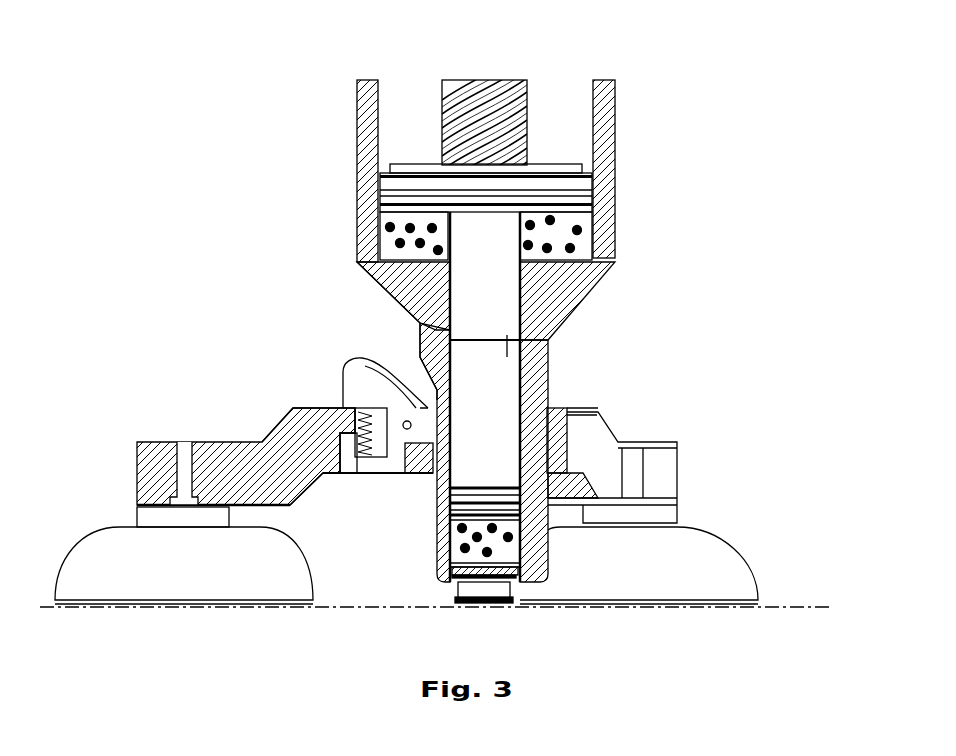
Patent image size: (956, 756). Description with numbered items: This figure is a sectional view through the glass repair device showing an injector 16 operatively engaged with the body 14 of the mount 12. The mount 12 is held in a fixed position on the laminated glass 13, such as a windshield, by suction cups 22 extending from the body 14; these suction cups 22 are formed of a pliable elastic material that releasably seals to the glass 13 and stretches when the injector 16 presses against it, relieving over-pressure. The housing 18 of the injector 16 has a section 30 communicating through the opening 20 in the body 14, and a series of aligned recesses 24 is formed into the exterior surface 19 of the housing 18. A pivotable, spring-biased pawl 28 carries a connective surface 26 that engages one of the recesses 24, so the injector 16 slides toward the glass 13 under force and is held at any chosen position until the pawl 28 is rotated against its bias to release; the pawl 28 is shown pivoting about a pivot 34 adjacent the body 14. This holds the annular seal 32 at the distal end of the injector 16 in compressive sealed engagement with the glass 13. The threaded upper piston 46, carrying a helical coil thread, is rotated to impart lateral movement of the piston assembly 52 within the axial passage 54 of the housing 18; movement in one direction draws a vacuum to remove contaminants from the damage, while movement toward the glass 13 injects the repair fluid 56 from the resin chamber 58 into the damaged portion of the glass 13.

The mount 12 is at (137, 445).
The glass 13 is at (345, 606).
The body 14 is at (280, 440).
The injector 16 is at (615, 125).
The housing 18 is at (600, 177).
The exterior surface 19 is at (606, 270).
The opening 20 is at (550, 403).
The suction cups 22 is at (125, 543).
The recesses 24 is at (427, 408).
The connective surface 26 is at (410, 446).
The pawl 28 is at (357, 372).
The section 30 is at (548, 367).
The seal 32 is at (458, 590).
The pin 34 is at (403, 422).
The upper piston 46 is at (527, 93).
The piston assembly 52 is at (392, 183).
The axial passage 54 is at (407, 118).
The repair fluid 56 is at (580, 231).
The resin chamber 58 is at (387, 238).